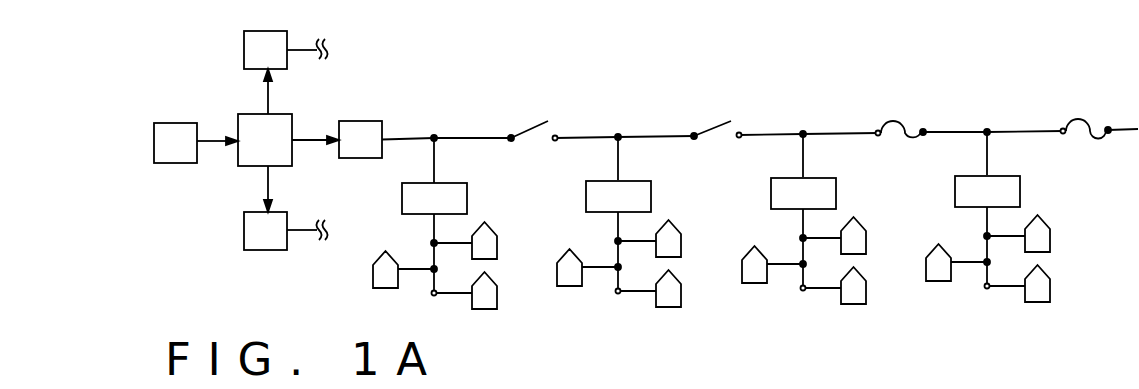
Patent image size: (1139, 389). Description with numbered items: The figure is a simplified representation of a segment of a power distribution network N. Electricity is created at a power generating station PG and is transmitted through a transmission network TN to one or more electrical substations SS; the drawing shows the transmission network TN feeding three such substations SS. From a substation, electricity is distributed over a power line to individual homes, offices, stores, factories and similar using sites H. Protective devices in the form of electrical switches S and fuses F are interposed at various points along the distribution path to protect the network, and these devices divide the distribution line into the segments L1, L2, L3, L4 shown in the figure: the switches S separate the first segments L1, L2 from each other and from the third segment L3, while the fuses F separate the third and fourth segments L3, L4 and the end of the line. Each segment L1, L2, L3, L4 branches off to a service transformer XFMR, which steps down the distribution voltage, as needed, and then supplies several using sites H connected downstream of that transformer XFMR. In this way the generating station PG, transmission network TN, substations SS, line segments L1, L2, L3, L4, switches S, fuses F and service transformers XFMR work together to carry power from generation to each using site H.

The power distribution network N is at (760, 78).
The power generating station PG is at (196, 143).
The transmission network TN is at (288, 140).
The electrical substation SS is at (313, 140).
The distribution line segment L1 is at (437, 143).
The distribution line segment L2 is at (618, 139).
The distribution line segment L3 is at (805, 140).
The distribution line segment L4 is at (988, 137).
The electrical switch S is at (625, 116).
The fuse F is at (994, 113).
The service transformer XFMR is at (711, 236).
The using site H is at (489, 230).